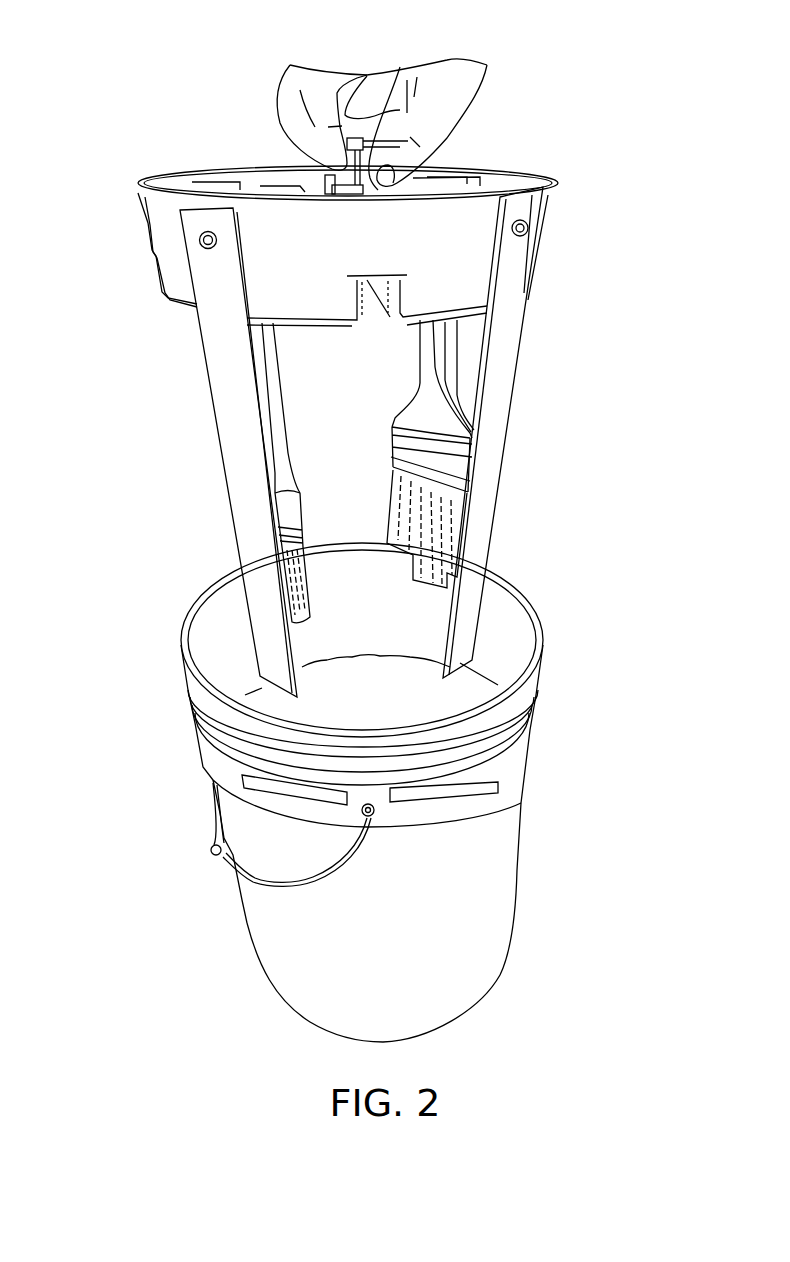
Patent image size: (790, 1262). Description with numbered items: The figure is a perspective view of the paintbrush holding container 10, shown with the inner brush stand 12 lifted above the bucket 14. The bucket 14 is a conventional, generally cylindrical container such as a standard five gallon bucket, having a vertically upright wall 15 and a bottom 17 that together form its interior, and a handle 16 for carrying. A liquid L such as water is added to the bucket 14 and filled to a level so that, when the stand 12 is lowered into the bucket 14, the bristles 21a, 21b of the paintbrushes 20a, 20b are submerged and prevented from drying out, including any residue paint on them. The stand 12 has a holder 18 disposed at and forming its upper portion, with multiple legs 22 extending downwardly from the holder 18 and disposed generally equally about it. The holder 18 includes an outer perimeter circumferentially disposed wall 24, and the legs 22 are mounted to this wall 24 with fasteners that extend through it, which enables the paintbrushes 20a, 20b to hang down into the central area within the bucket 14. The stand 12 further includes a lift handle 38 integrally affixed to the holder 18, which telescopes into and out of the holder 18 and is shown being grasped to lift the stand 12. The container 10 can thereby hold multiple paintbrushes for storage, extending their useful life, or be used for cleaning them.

The paintbrush holding container 10 is at (170, 432).
The inner brush stand 12 is at (163, 228).
The bucket 14 is at (478, 837).
The wall 15 is at (418, 917).
The handle 16 is at (232, 871).
The bottom 17 is at (295, 1014).
The holder 18 is at (447, 227).
The paintbrush 20a is at (427, 358).
The paintbrush 20b is at (262, 366).
The bristles 21a is at (397, 487).
The bristles 21b is at (300, 592).
The legs 22 is at (270, 658).
The wall 24 is at (465, 273).
The lift handle 38 is at (395, 95).
The liquid L is at (457, 698).